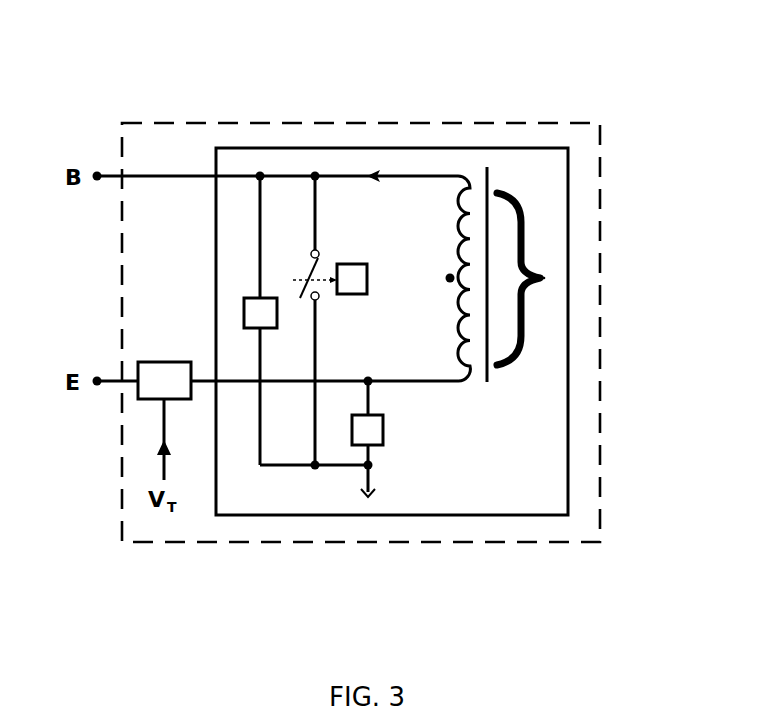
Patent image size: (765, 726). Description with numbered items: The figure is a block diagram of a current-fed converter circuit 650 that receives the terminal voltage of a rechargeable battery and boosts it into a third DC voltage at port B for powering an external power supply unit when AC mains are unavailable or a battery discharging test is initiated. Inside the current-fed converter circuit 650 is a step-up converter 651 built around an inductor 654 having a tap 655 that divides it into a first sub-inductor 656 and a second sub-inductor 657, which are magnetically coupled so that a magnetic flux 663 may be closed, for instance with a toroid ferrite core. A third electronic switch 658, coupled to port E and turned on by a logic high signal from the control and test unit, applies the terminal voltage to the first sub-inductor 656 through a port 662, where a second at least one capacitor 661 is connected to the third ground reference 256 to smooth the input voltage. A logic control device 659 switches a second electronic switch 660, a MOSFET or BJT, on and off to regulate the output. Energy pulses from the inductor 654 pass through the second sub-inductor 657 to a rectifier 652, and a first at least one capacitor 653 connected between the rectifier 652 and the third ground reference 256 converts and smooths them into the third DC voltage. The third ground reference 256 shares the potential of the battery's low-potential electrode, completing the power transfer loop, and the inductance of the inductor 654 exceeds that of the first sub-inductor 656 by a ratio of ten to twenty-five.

The current-fed converter circuit 650 is at (282, 123).
The step-up converter 651 is at (316, 148).
The rectifier 652 is at (376, 172).
The first at least one capacitor 653 is at (245, 319).
The inductor 654 is at (527, 294).
The tap 655 is at (451, 278).
The first sub-inductor 656 is at (462, 352).
The second sub-inductor 657 is at (460, 200).
The third electronic switch 658 is at (150, 401).
The logic control device 659 is at (368, 281).
The second electronic switch 660 is at (312, 268).
The second at least one capacitor 661 is at (384, 426).
The port 662 is at (370, 382).
The magnetic flux 663 is at (487, 167).
The third ground reference 256 is at (370, 497).